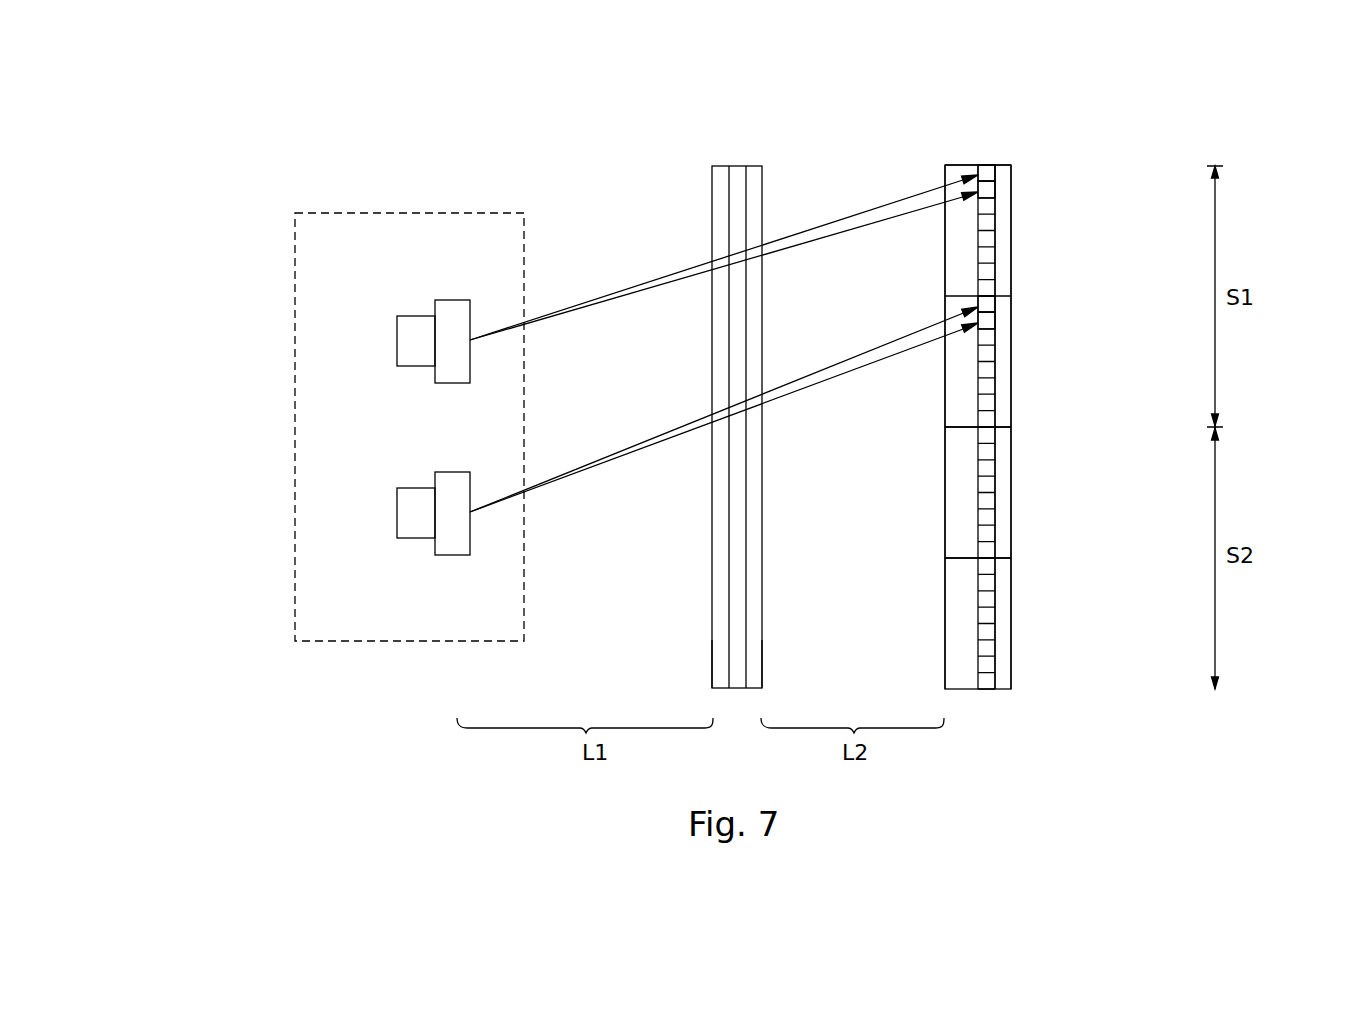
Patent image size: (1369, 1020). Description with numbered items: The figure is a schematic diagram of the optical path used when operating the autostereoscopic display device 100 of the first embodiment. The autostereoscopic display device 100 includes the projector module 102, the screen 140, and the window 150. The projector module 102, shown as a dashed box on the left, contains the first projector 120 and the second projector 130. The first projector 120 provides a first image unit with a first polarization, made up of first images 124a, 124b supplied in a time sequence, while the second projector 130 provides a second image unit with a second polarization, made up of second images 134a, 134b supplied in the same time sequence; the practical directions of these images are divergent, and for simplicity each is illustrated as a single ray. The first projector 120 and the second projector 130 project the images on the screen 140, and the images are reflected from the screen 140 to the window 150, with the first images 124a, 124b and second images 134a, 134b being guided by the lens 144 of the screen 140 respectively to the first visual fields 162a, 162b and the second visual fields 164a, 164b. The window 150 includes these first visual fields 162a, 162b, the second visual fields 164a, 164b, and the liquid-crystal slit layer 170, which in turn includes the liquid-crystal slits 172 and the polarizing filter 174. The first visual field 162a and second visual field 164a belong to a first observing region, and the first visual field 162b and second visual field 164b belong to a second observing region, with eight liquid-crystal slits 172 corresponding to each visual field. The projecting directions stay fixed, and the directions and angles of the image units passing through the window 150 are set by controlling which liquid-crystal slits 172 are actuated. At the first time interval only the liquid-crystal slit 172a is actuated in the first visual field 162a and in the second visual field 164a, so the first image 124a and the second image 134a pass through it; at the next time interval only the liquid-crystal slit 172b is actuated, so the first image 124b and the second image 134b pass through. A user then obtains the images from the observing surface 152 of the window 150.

The autostereoscopic display device 100 is at (203, 88).
The projector module 102 is at (295, 378).
The first projector 120 is at (455, 300).
The second projector 130 is at (455, 555).
The first image 124a is at (825, 222).
The first image 124b is at (853, 230).
The second image 134a is at (830, 357).
The second image 134b is at (858, 373).
The screen 140 is at (736, 142).
The lens 144 is at (718, 688).
The window 150 is at (978, 142).
The observing surface 152 is at (1060, 452).
The first visual field 162a is at (965, 240).
The first visual field 162b is at (965, 500).
The second visual field 164a is at (965, 372).
The second visual field 164b is at (965, 630).
The liquid-crystal slit layer 170 is at (1063, 740).
The liquid-crystal slits 172 is at (986, 690).
The liquid-crystal slit 172a is at (990, 172).
The liquid-crystal slit 172b is at (995, 187).
The polarizing filter 174 is at (1000, 690).